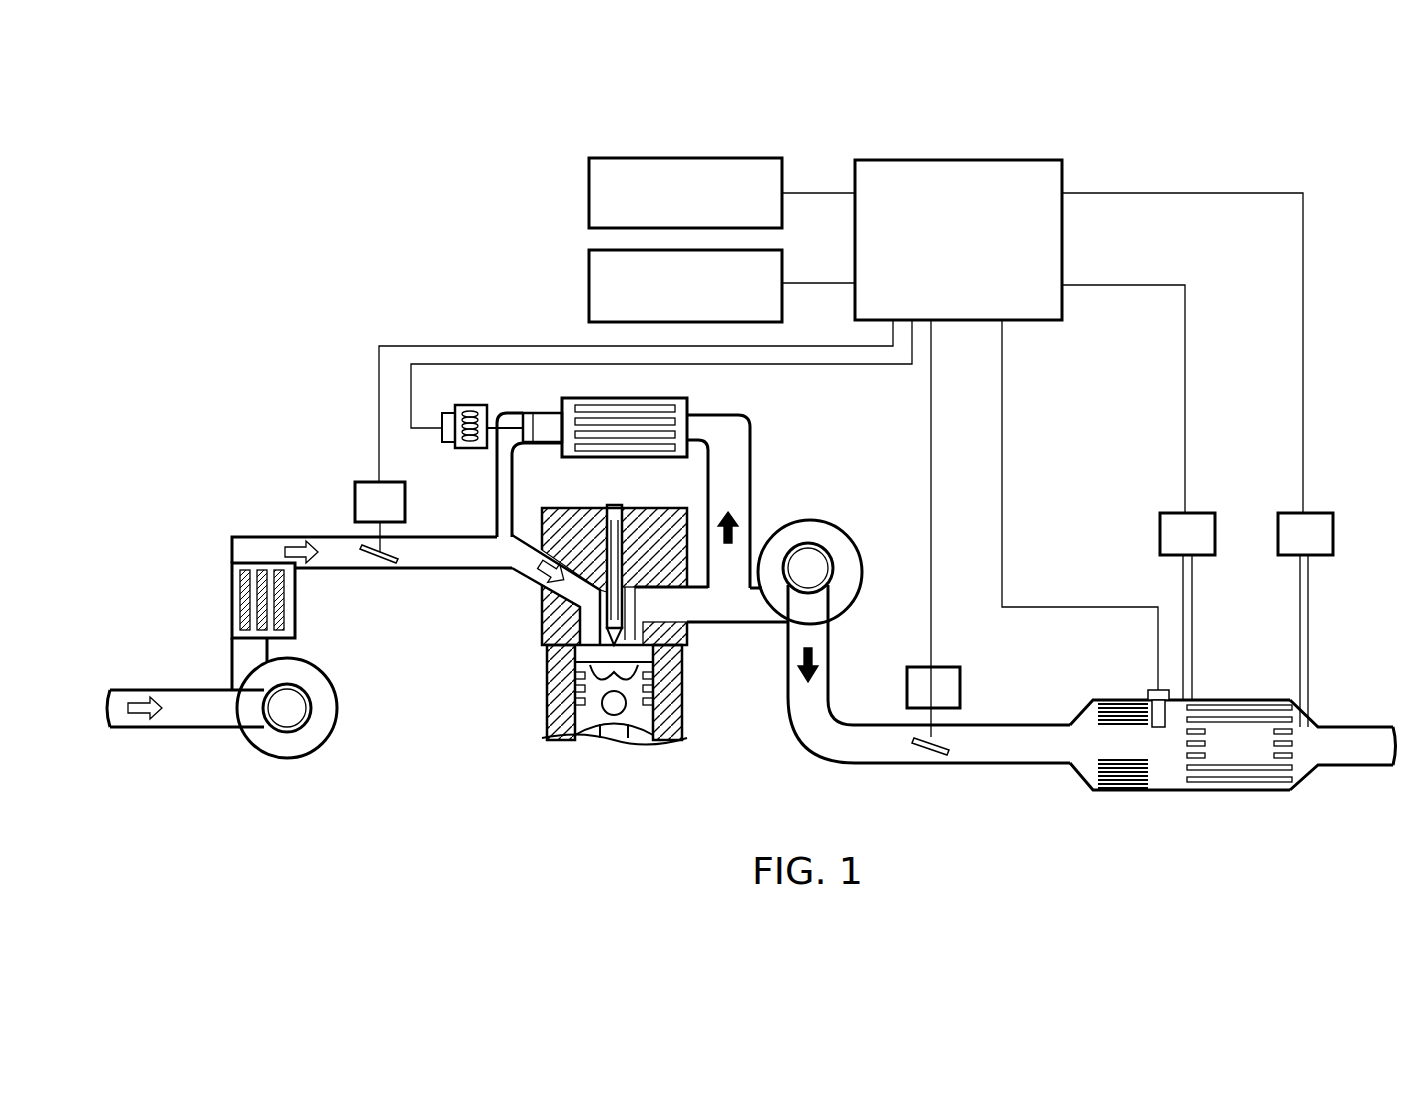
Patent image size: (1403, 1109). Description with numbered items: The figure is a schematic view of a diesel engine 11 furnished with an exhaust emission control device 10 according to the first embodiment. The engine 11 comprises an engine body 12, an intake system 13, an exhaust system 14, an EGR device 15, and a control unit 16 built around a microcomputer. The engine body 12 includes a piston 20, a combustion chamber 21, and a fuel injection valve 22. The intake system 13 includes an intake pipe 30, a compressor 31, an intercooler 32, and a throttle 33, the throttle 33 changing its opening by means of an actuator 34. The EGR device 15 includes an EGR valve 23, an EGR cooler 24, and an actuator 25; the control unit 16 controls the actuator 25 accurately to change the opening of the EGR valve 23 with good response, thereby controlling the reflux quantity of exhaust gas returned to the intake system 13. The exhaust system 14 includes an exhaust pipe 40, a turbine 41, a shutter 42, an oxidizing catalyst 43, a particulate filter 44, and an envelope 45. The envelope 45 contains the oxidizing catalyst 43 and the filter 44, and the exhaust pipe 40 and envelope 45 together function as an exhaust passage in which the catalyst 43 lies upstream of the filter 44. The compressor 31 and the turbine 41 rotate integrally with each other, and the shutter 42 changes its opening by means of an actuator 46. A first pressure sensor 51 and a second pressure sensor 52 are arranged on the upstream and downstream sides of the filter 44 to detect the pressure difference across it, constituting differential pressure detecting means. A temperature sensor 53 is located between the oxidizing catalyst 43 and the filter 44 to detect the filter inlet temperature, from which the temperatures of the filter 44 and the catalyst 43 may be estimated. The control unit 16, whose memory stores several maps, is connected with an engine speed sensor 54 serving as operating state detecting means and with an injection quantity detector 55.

The exhaust emission control device 10 is at (1255, 146).
The diesel engine 11 is at (324, 268).
The engine body 12 is at (545, 716).
The intake system 13 is at (247, 516).
The exhaust system 14 is at (1036, 810).
The EGR device 15 is at (711, 404).
The control unit 16 is at (1008, 158).
The piston 20 is at (640, 712).
The combustion chamber 21 is at (680, 675).
The fuel injection valve 22 is at (622, 640).
The EGR valve 23 is at (470, 450).
The EGR cooler 24 is at (632, 458).
The actuator 25 is at (447, 413).
The intake pipe 30 is at (440, 570).
The compressor 31 is at (330, 732).
The intercooler 32 is at (232, 603).
The throttle 33 is at (372, 572).
The actuator 34 is at (355, 495).
The exhaust pipe 40 is at (965, 765).
The turbine 41 is at (826, 523).
The shutter 42 is at (913, 750).
The oxidizing catalyst 43 is at (1130, 782).
The particulate filter 44 is at (1262, 775).
The envelope 45 is at (1308, 778).
The actuator 46 is at (960, 690).
The first pressure sensor 51 is at (1160, 534).
The second pressure sensor 52 is at (1333, 534).
The temperature sensor 53 is at (1150, 692).
The engine speed sensor 54 is at (589, 193).
The injection quantity detector 55 is at (589, 284).